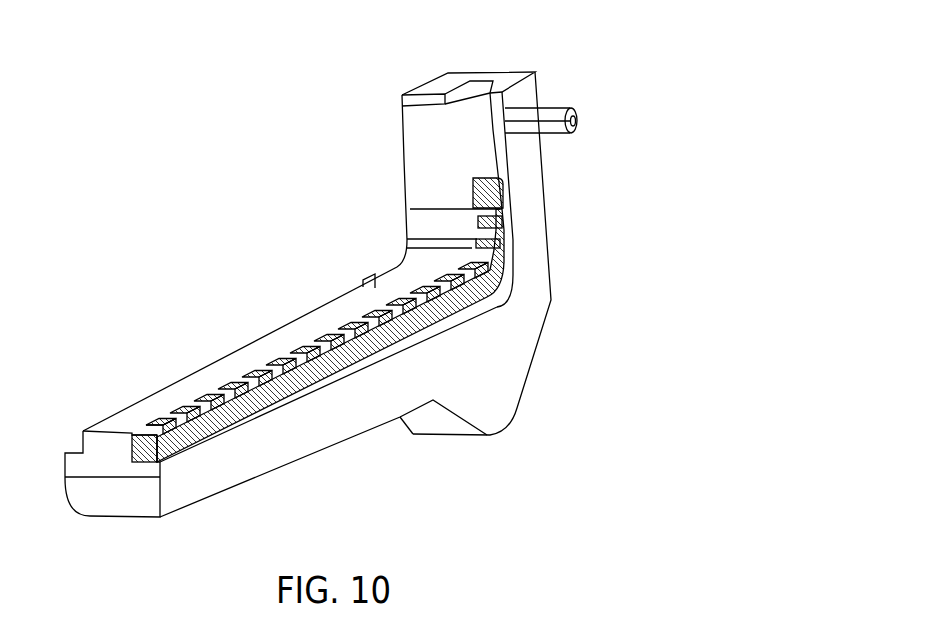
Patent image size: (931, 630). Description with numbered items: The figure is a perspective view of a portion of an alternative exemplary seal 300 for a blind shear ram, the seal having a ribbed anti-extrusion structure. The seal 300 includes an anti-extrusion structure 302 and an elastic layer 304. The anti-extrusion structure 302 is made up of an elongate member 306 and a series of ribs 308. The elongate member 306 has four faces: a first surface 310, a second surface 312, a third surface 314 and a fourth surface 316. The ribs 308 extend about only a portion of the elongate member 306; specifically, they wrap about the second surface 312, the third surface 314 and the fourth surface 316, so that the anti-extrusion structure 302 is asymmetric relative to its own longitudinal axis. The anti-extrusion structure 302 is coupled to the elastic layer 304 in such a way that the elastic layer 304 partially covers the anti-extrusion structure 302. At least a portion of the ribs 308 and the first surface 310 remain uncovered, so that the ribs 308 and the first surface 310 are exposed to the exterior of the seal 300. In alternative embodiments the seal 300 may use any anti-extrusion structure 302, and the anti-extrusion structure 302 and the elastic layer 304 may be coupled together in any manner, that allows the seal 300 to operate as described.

The seal 300 is at (505, 47).
The anti-extrusion structure 302 is at (461, 314).
The elastic layer 304 is at (106, 430).
The elongate member 306 is at (128, 460).
The ribs 308 is at (170, 432).
The first surface 310 is at (158, 416).
The second surface 312 is at (138, 468).
The third surface 314 is at (130, 447).
The fourth surface 316 is at (150, 468).